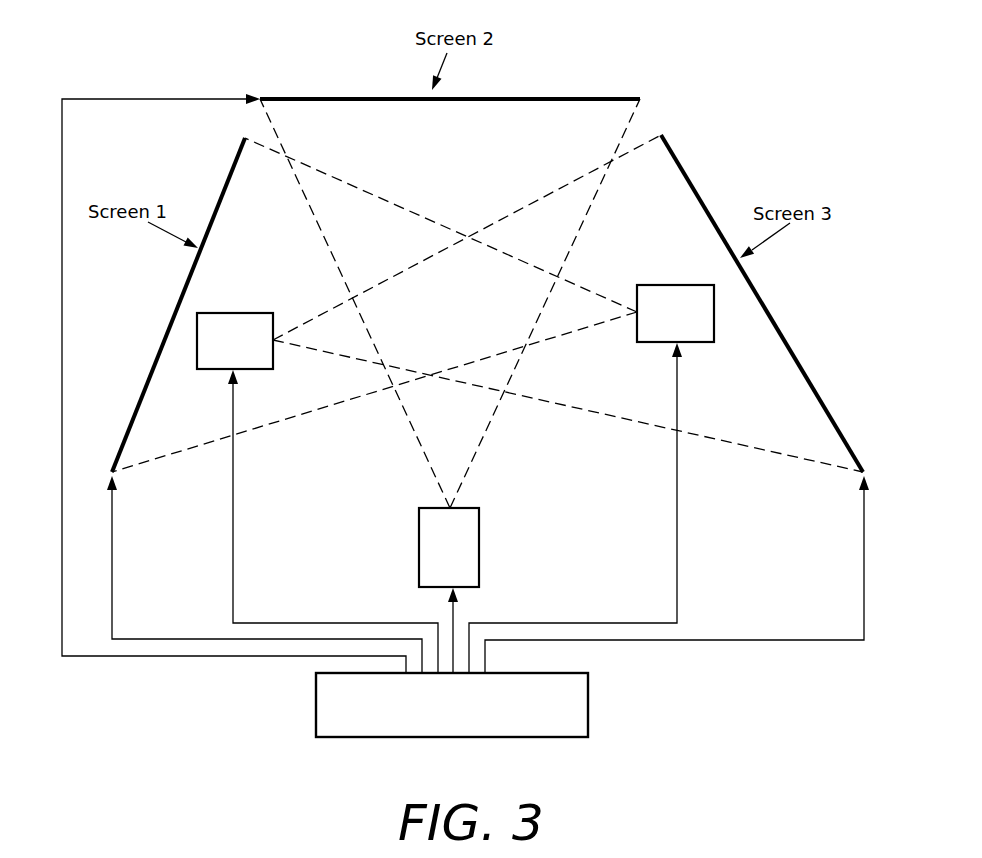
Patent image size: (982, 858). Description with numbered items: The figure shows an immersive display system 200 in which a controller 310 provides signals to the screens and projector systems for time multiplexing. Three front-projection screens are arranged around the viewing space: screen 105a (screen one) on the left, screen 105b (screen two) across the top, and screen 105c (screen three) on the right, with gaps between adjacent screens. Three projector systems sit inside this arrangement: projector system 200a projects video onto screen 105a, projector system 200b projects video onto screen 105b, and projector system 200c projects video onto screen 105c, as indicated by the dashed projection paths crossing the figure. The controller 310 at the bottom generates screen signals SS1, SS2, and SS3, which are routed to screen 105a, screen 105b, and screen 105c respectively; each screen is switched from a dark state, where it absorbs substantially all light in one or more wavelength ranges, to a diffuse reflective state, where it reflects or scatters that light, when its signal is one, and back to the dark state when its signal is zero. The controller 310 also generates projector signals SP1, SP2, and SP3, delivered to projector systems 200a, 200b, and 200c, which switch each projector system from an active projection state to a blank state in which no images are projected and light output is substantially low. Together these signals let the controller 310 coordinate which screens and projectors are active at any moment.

The immersive display system 200 is at (715, 87).
The screen 105a is at (177, 306).
The screen 105b is at (503, 97).
The screen 105c is at (768, 312).
The projector system 200a is at (692, 298).
The projector system 200b is at (437, 573).
The projector system 200c is at (231, 320).
The controller 310 is at (563, 713).
The screen signal SS1 is at (112, 575).
The screen signal SS2 is at (125, 656).
The screen signal SS3 is at (864, 551).
The projector signal SP1 is at (677, 533).
The projector signal SP2 is at (455, 620).
The projector signal SP3 is at (233, 557).